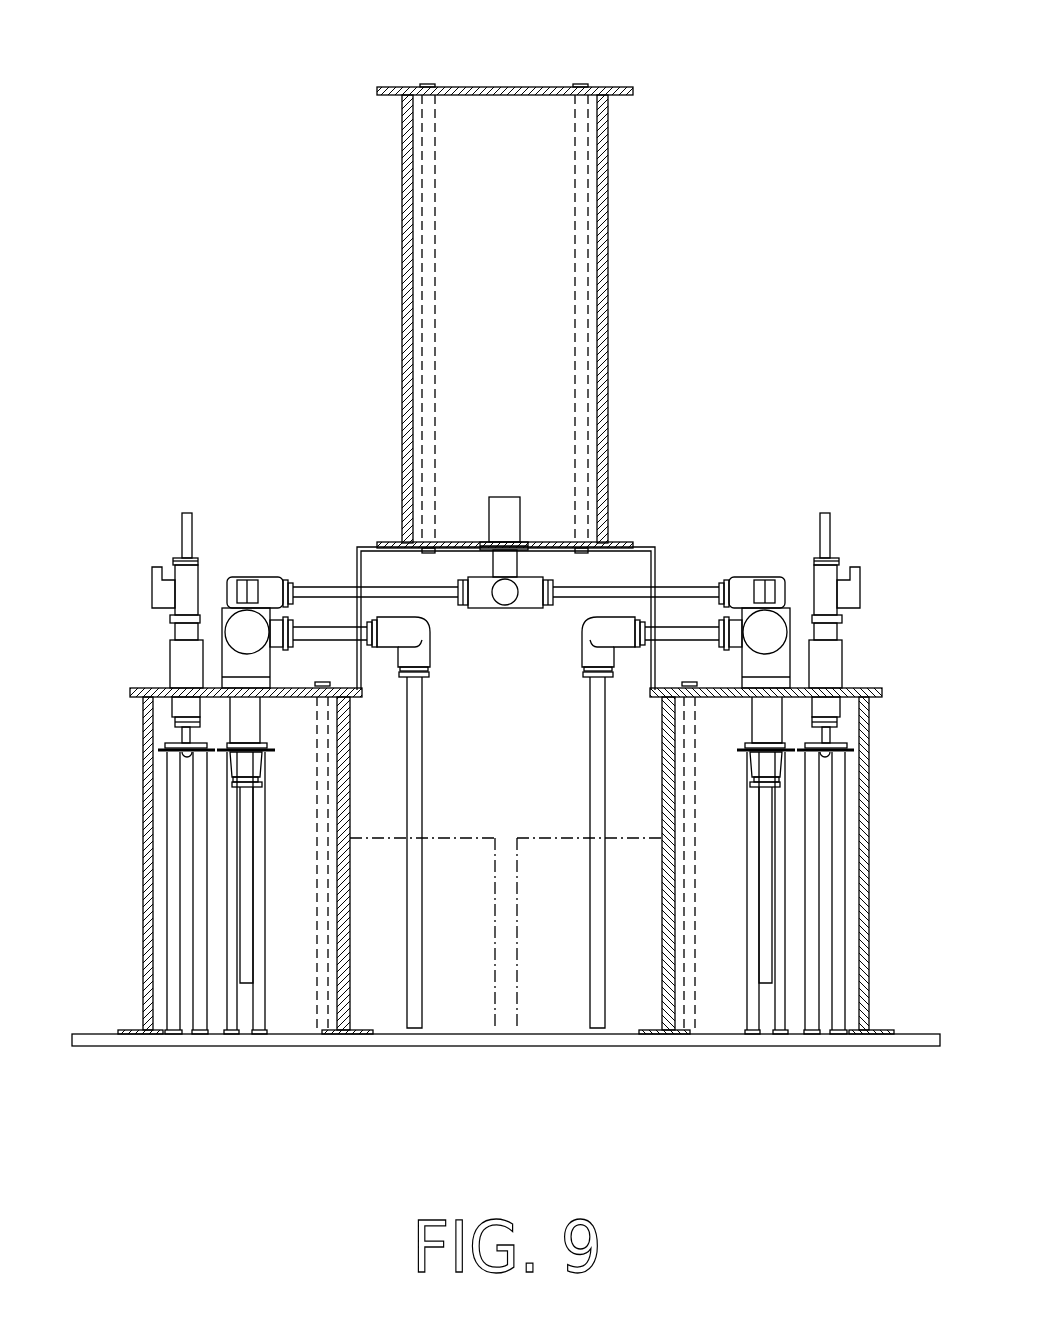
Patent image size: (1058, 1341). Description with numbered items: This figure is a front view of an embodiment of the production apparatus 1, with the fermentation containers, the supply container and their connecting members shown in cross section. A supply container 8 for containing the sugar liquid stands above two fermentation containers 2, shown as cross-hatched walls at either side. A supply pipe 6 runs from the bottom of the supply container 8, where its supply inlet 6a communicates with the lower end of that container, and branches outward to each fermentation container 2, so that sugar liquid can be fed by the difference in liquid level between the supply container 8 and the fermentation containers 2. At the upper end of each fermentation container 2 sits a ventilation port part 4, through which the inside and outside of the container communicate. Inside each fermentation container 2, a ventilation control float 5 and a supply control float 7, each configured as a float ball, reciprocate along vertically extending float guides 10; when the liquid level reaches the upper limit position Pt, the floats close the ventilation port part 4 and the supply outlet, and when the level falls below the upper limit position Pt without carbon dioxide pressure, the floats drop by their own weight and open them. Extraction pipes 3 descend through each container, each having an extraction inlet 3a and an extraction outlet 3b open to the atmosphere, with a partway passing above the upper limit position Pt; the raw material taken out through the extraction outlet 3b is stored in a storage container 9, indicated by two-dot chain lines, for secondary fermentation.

The production apparatus 1 is at (273, 85).
The fermentation container 2 is at (145, 733).
The extraction pipe 3 is at (427, 712).
The extraction inlet 3a is at (247, 990).
The extraction outlet 3b is at (413, 1032).
The ventilation port part 4 is at (180, 540).
The ventilation control float 5 is at (183, 757).
The supply pipe 6 is at (325, 585).
The supply inlet 6a is at (507, 487).
The supply control float 7 is at (243, 757).
The supply container 8 is at (610, 162).
The storage container 9 is at (548, 832).
The float guide 10 is at (258, 832).
The upper limit position Pt is at (123, 752).